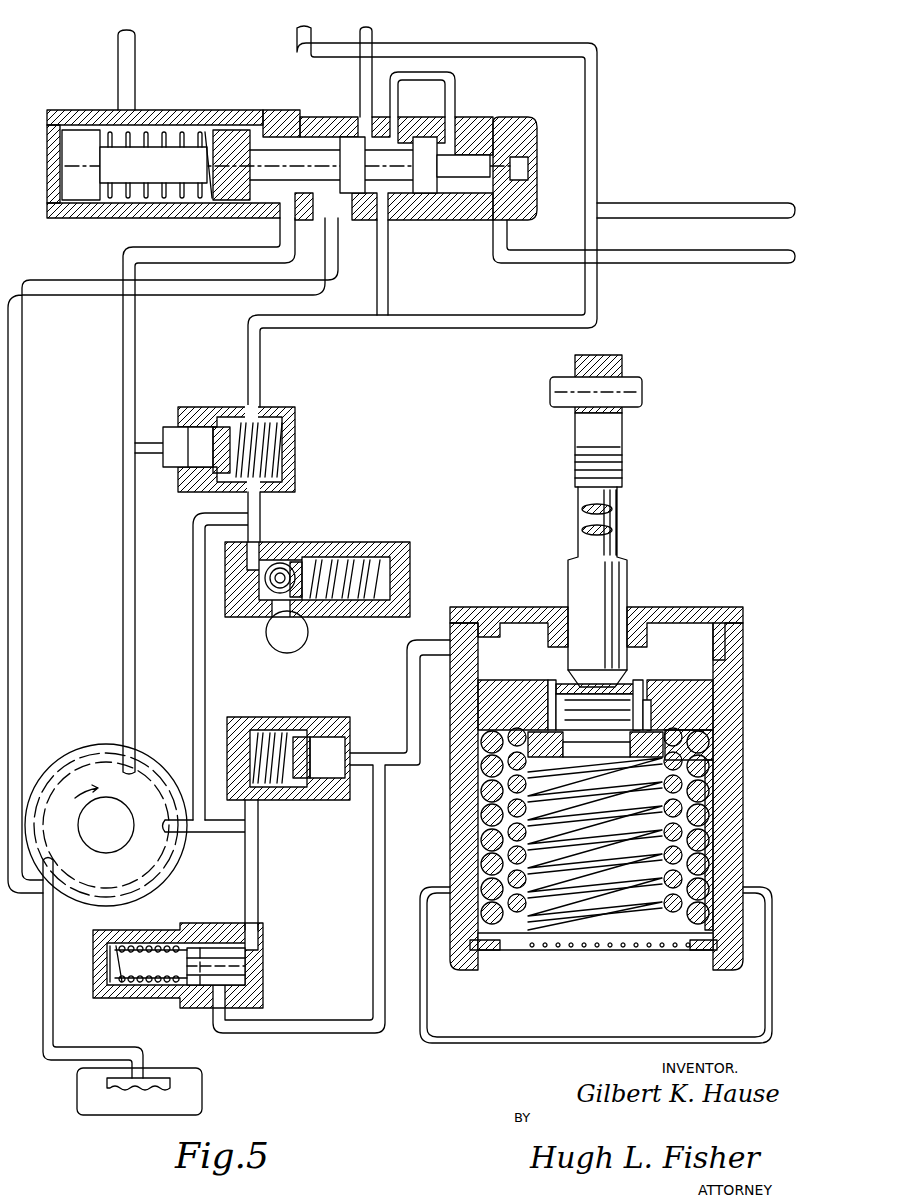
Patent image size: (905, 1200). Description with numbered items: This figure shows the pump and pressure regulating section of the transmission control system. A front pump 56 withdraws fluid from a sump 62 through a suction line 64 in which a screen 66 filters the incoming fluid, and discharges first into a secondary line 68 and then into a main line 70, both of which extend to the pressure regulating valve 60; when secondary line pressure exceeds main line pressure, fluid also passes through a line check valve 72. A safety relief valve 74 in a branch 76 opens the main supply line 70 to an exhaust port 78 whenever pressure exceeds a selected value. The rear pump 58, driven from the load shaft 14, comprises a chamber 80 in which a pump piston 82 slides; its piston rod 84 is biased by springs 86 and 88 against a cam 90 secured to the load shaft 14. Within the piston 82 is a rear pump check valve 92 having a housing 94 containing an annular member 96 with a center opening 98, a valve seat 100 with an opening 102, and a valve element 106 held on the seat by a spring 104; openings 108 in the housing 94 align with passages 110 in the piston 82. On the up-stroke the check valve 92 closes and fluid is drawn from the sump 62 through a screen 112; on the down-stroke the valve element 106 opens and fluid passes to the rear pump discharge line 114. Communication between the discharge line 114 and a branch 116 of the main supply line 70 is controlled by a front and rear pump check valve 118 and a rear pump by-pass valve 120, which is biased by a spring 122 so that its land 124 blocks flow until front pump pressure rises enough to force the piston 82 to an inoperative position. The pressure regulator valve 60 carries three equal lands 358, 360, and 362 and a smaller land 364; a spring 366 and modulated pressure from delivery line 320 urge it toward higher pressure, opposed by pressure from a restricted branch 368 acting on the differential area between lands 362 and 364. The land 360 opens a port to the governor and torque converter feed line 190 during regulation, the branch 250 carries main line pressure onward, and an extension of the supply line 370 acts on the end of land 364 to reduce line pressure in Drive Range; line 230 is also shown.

The load shaft 14 is at (630, 385).
The front pump 56 is at (54, 758).
The rear pump 58 is at (684, 603).
The pressure regulating valve 60 is at (446, 196).
The sump 62 is at (200, 1093).
The suction line 64 is at (173, 288).
The screen 66 is at (170, 1080).
The secondary line 68 is at (128, 378).
The main line 70 is at (668, 210).
The line check valve 72 is at (235, 410).
The safety relief valve 74 is at (285, 558).
The branch 76 is at (255, 530).
The exhaust port 78 is at (302, 642).
The chamber 80 is at (725, 838).
The pump piston 82 is at (692, 683).
The piston rod 84 is at (608, 540).
The spring 86 is at (482, 816).
The spring 88 is at (508, 852).
The cam 90 is at (625, 460).
The rear pump check valve 92 is at (648, 712).
The housing 94 is at (666, 735).
The annular member 96 is at (712, 775).
The center opening 98 is at (578, 762).
The valve seat 100 is at (537, 737).
The opening 102 is at (565, 730).
The spring 104 is at (638, 690).
The valve element 106 is at (648, 700).
The openings 108 is at (552, 690).
The passages 110 is at (568, 690).
The screen 112 is at (517, 950).
The rear pump discharge line 114 is at (412, 672).
The branch 116 is at (248, 865).
The front and rear pump check valve 118 is at (335, 716).
The rear pump by-pass valve 120 is at (250, 975).
The spring 122 is at (128, 950).
The land 124 is at (190, 985).
The governor and torque converter feed line 190 is at (372, 40).
The line 230 is at (596, 170).
The branch 250 is at (297, 48).
The delivery line 320 is at (128, 95).
The land 358 is at (258, 145).
The land 360 is at (348, 150).
The land 362 is at (420, 150).
The land 364 is at (470, 162).
The spring 366 is at (178, 122).
The restricted branch 368 is at (456, 85).
The supply line 370 is at (720, 258).